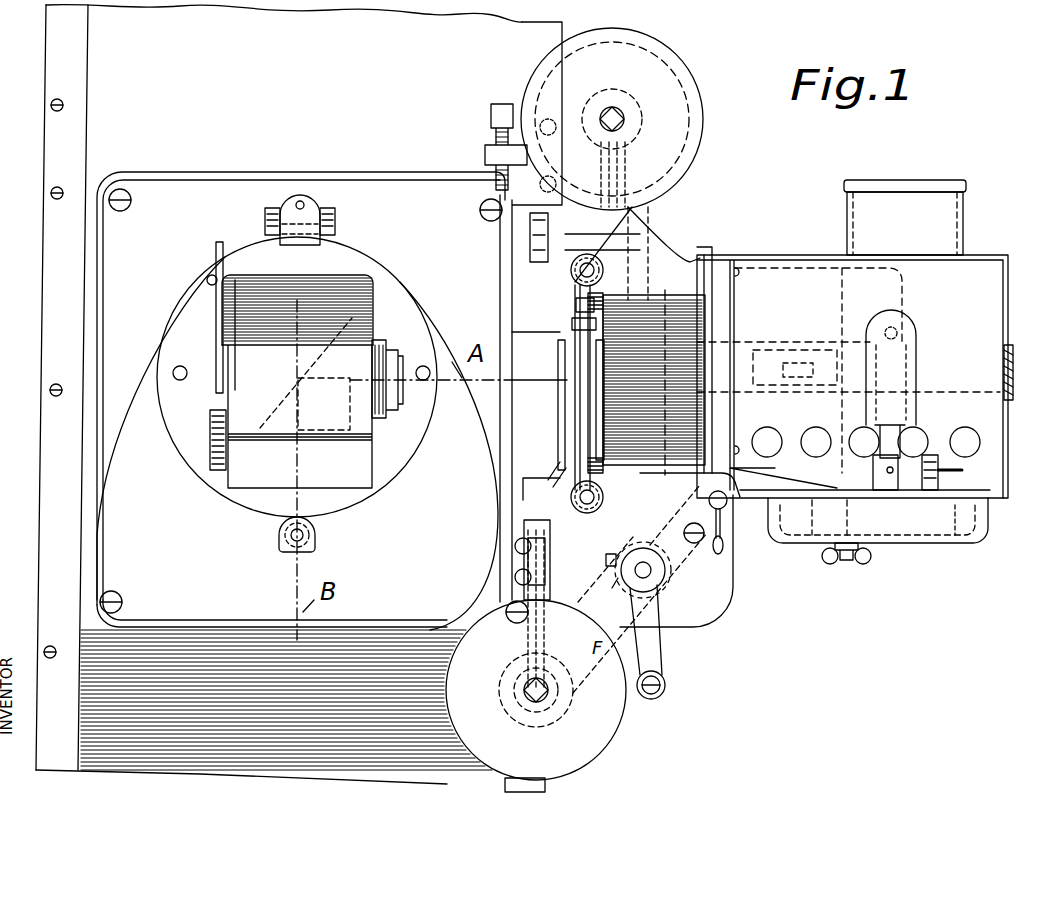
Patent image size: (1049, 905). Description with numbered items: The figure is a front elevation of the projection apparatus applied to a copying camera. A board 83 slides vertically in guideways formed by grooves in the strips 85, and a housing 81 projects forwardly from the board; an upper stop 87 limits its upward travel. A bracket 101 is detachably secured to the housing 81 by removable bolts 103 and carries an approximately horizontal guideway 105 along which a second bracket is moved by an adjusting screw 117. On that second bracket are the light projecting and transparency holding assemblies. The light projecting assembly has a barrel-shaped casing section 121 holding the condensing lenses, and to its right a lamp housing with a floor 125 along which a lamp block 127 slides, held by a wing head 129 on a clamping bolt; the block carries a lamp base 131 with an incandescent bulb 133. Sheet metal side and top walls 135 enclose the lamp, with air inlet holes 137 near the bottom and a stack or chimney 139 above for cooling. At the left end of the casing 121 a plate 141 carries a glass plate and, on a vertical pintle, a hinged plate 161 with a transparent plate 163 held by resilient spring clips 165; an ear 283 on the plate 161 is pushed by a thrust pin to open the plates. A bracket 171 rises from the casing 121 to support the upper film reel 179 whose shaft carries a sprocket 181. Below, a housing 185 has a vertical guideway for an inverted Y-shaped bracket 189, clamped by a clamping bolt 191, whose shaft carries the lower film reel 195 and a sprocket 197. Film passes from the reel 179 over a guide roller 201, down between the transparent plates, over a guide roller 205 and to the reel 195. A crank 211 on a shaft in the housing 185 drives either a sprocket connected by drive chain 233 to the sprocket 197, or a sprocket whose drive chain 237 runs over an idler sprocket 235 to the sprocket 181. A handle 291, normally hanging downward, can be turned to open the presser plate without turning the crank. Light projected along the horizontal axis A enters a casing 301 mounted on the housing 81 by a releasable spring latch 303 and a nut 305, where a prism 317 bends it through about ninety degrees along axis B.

The strips 85 is at (80, 145).
The board 83 is at (313, 438).
The housing 81 is at (212, 192).
The casing 301 is at (365, 462).
The prism 317 is at (280, 392).
The releasable spring latch 303 is at (330, 212).
The nut 305 is at (318, 530).
The upper stop 87 is at (490, 172).
The removable bolts 103 is at (530, 236).
The film reel 179 is at (682, 62).
The sprocket 181 is at (630, 137).
The drive chain 237 is at (650, 214).
The bracket 171 is at (640, 232).
The guide roller 201 is at (570, 271).
The bracket 101 is at (575, 292).
The plate 161 is at (575, 308).
The transparent plate 163 is at (572, 325).
The guideway 105 is at (558, 352).
The resilient spring clips 165 is at (596, 362).
The ear 283 is at (558, 482).
The plate 141 is at (603, 460).
The casing section 121 is at (660, 340).
The guide roller 205 is at (603, 498).
The crank 211 is at (655, 658).
The Y-shaped bracket 189 is at (522, 640).
The sprocket 197 is at (566, 692).
The film reel 195 is at (612, 728).
The clamping bolt 191 is at (515, 547).
The idler sprocket 235 is at (610, 562).
The drive chain 233 is at (606, 590).
The housing 185 is at (718, 578).
The handle 291 is at (726, 550).
The side and top walls 135 is at (780, 258).
The stack or chimney 139 is at (956, 228).
The incandescent bulb 133 is at (912, 336).
The air inlet holes 137 is at (830, 430).
The lamp base 131 is at (880, 466).
The adjusting screw 117 is at (1010, 352).
The floor 125 is at (975, 508).
The lamp block 127 is at (956, 538).
The wing head 129 is at (848, 562).